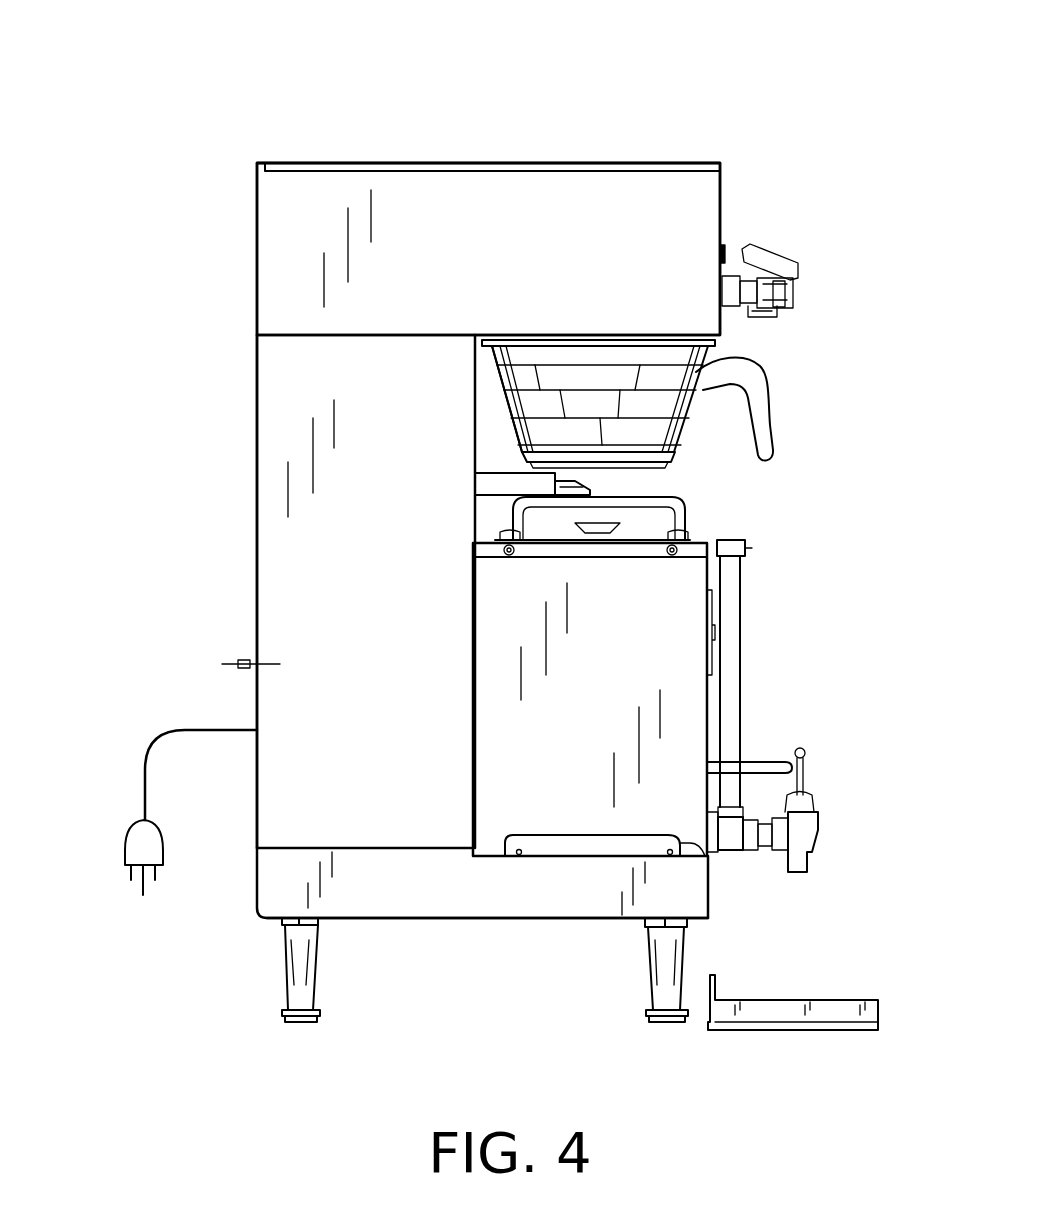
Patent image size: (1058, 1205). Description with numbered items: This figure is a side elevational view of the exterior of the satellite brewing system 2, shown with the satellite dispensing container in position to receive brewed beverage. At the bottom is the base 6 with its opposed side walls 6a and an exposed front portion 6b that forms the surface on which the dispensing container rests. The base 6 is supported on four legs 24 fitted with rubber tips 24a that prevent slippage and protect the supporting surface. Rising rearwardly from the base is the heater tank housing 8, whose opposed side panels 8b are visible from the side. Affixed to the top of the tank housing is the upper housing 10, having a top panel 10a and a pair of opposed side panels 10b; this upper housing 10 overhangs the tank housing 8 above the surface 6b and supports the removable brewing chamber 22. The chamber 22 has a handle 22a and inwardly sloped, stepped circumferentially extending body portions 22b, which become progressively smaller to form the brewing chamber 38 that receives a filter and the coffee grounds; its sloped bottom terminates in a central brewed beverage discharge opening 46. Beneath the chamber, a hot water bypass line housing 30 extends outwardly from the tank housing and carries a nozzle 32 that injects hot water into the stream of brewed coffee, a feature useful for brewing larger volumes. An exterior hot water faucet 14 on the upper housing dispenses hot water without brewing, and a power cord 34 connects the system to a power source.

The satellite brewing system 2 is at (645, 120).
The upper housing 10 is at (285, 240).
The top panel 10a is at (433, 162).
The side panels 10b is at (440, 256).
The hot water faucet 14 is at (795, 295).
The brewing chamber 38 is at (595, 335).
The brewing chamber 22 is at (668, 372).
The handle 22a is at (763, 420).
The stepped circumferentially extending body portions 22b is at (490, 430).
The heater tank housing 8 is at (262, 420).
The side panels 8b is at (385, 536).
The hot water bypass line housing 30 is at (473, 477).
The nozzle 32 is at (603, 475).
The central brewed beverage discharge opening 46 is at (478, 462).
The base 6 is at (447, 897).
The side walls 6a is at (512, 901).
The exposed front portion 6b is at (710, 850).
The legs 24 is at (305, 987).
The rubber tips 24a is at (300, 1027).
The power cord 34 is at (158, 733).